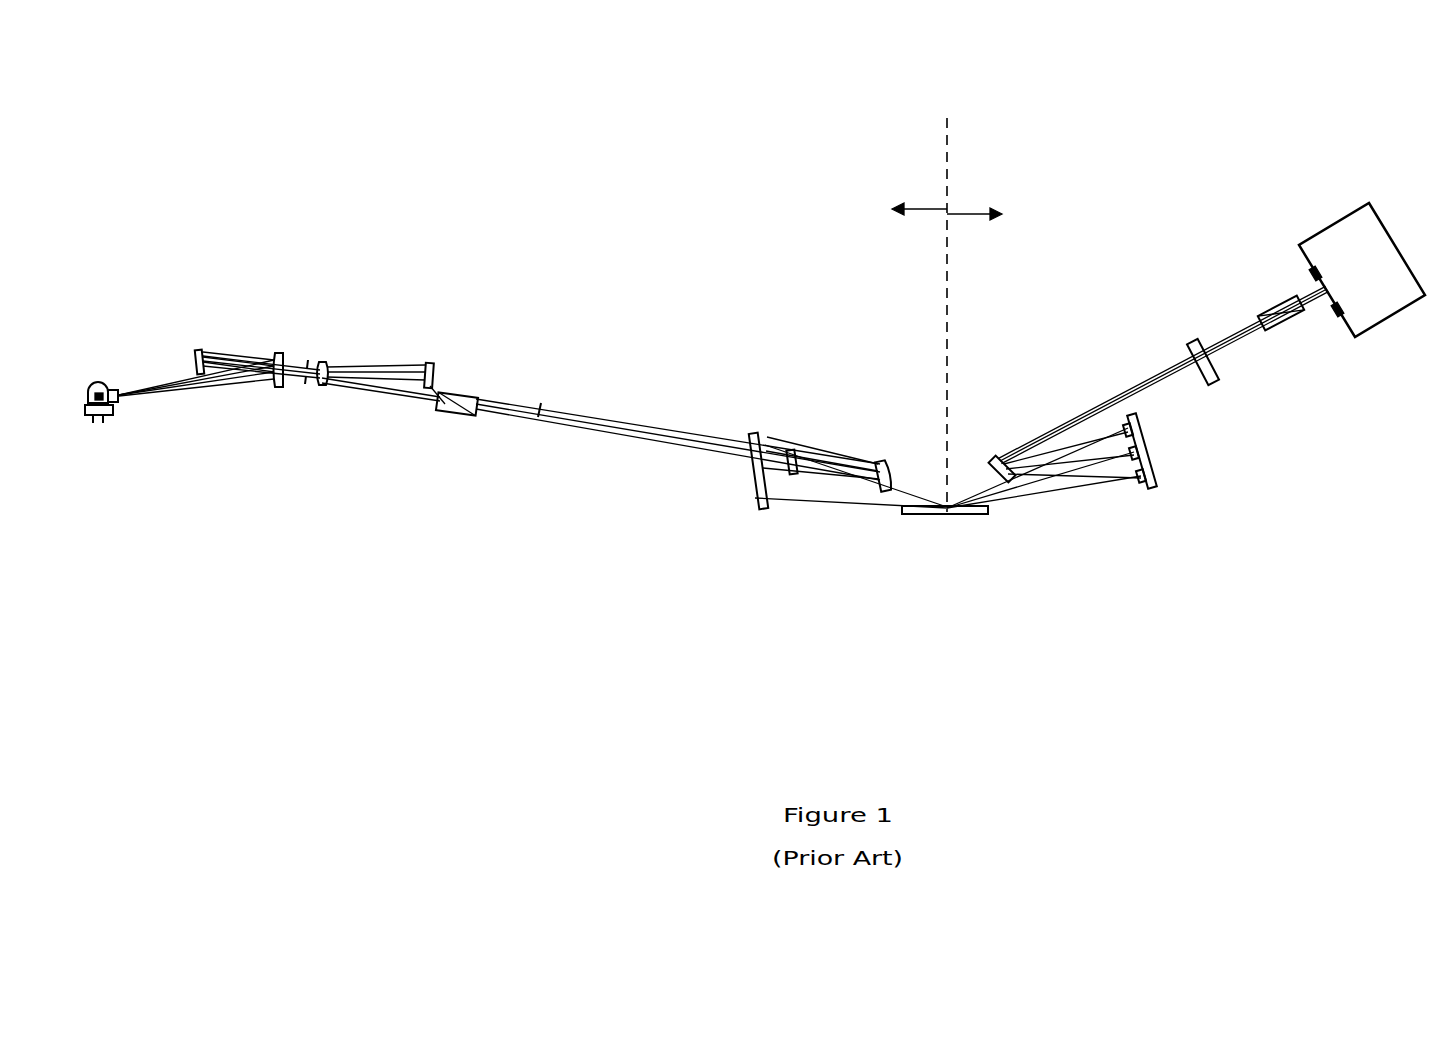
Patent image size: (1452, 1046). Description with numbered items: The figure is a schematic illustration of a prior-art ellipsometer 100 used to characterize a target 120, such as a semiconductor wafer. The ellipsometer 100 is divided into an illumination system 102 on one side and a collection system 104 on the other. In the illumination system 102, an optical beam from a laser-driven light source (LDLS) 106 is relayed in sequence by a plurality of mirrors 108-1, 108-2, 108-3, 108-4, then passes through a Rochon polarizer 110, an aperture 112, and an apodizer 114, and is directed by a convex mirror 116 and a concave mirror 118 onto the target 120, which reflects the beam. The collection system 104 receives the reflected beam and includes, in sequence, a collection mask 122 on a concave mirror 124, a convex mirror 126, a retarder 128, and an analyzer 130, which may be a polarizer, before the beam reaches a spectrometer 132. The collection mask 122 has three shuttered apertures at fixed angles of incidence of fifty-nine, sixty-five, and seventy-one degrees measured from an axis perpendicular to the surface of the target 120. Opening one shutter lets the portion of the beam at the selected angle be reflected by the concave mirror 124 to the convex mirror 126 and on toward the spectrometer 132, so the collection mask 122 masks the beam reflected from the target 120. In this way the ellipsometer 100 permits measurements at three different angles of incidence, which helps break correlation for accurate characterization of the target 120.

The ellipsometer 100 is at (566, 77).
The illumination system 102 is at (865, 208).
The collection system 104 is at (1029, 213).
The laser-driven light source (LDLS) 106 is at (97, 379).
The mirror 108-1 is at (273, 390).
The mirror 108-2 is at (199, 347).
The mirror 108-3 is at (427, 360).
The mirror 108-4 is at (322, 390).
The Rochon polarizer 110 is at (463, 391).
The aperture 112 is at (538, 422).
The apodizer 114 is at (795, 447).
The convex mirror 116 is at (885, 460).
The concave mirror 118 is at (752, 513).
The target 120 is at (947, 516).
The collection mask 122 is at (1137, 490).
The concave mirror 124 is at (1134, 418).
The convex mirror 126 is at (998, 456).
The retarder 128 is at (1215, 385).
The analyzer 130 is at (1288, 323).
The spectrometer 132 is at (1338, 214).